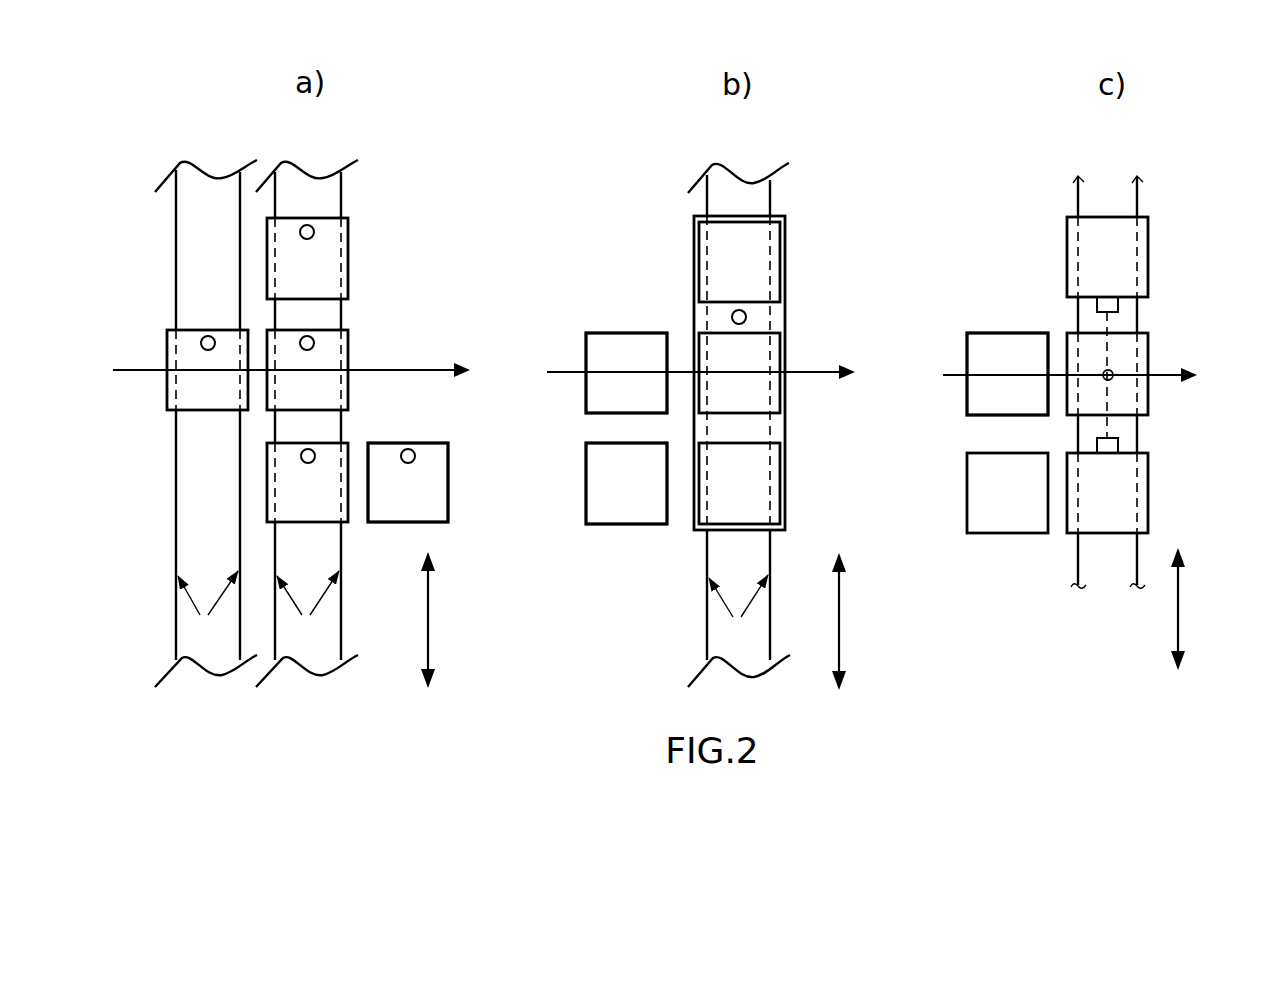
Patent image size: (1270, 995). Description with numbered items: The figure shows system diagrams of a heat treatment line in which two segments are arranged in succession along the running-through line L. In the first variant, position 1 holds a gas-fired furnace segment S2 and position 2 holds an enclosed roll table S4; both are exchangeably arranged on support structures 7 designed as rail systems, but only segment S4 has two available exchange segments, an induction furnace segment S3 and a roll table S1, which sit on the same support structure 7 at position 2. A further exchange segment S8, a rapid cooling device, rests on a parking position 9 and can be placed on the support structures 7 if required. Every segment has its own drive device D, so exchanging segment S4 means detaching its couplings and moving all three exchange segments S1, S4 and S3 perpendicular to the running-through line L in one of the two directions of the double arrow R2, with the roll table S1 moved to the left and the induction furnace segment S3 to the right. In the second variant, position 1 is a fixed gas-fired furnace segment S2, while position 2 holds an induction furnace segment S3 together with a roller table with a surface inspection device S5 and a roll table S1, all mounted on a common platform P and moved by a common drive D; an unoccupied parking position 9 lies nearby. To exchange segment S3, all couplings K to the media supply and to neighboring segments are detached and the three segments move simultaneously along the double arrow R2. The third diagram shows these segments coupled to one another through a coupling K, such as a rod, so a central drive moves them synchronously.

In FIG. 2a, the position 1 is at (206, 439).
In FIG. 2b, the position 1 is at (626, 524).
In FIG. 2c, the position 1 is at (1007, 519).
In FIG. 2a, the position 2 is at (307, 439).
In FIG. 2b, the position 2 is at (739, 439).
In FIG. 2c, the position 2 is at (1108, 440).
In FIG. 2a, the support structure 7 is at (258, 611).
In FIG. 2b, the support structure 7 is at (738, 613).
In FIG. 2c, the support structure 7 is at (1080, 197).
In FIG. 2a, the parking position 9 is at (448, 517).
In FIG. 2b, the parking position 9 is at (626, 515).
In FIG. 2a, the drive device D is at (203, 337).
In FIG. 2b, the drive device D is at (746, 314).
In FIG. 2c, the drive device D is at (1104, 371).
In FIG. 2a, the running-through line L is at (302, 372).
In FIG. 2b, the running-through line L is at (710, 374).
In FIG. 2c, the running-through line L is at (1080, 377).
In FIG. 2b, the common platform P is at (747, 428).
In FIG. 2c, the coupling K is at (1107, 425).
In FIG. 2a, the double arrow R2 is at (443, 620).
In FIG. 2b, the double arrow R2 is at (854, 621).
In FIG. 2c, the double arrow R2 is at (1193, 609).
In FIG. 2a, the roll table S1 is at (307, 482).
In FIG. 2b, the roll table S1 is at (739, 483).
In FIG. 2c, the roll table S1 is at (1107, 493).
In FIG. 2a, the gas-fired furnace segment S2 is at (207, 370).
In FIG. 2b, the gas-fired furnace segment S2 is at (626, 373).
In FIG. 2c, the gas-fired furnace segment S2 is at (1007, 374).
In FIG. 2a, the induction furnace segment S3 is at (307, 258).
In FIG. 2b, the induction furnace segment S3 is at (739, 373).
In FIG. 2c, the induction furnace segment S3 is at (1072, 353).
In FIG. 2a, the enclosed roll table S4 is at (307, 370).
In FIG. 2b, the roller table with a surface inspection device S5 is at (739, 262).
In FIG. 2c, the roller table with a surface inspection device S5 is at (1107, 264).
In FIG. 2a, the exchange segment S8 is at (408, 482).